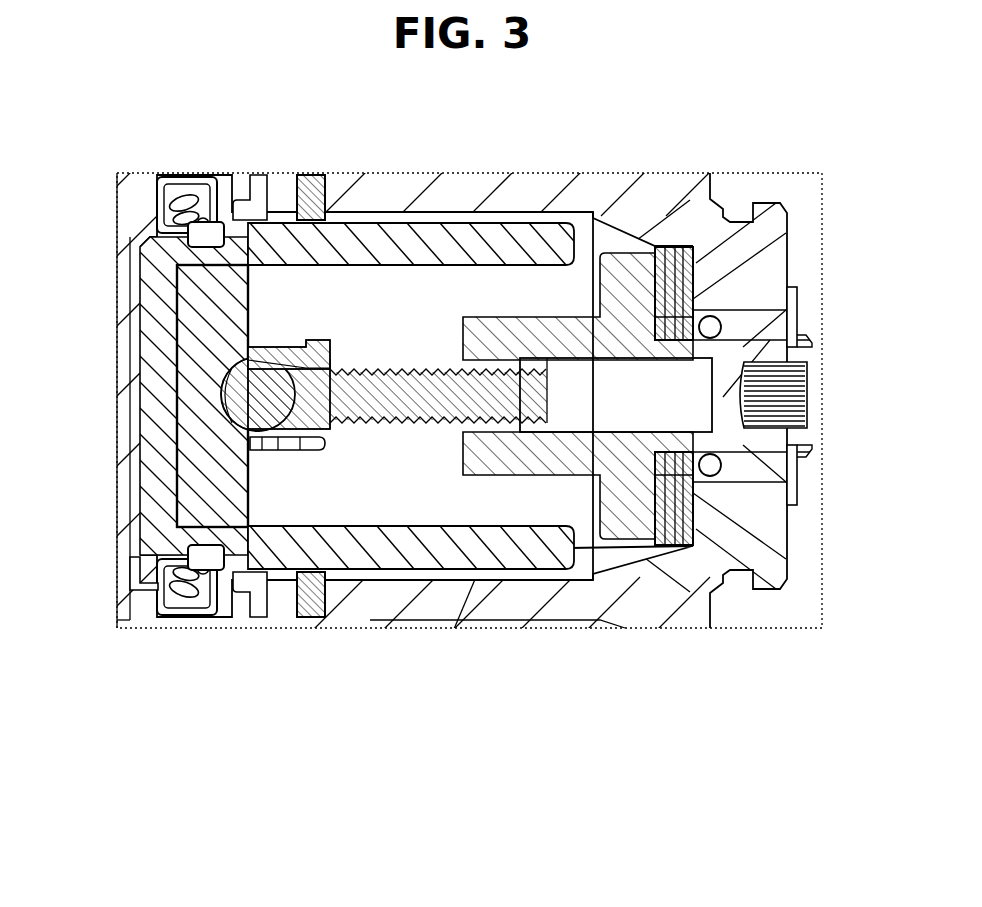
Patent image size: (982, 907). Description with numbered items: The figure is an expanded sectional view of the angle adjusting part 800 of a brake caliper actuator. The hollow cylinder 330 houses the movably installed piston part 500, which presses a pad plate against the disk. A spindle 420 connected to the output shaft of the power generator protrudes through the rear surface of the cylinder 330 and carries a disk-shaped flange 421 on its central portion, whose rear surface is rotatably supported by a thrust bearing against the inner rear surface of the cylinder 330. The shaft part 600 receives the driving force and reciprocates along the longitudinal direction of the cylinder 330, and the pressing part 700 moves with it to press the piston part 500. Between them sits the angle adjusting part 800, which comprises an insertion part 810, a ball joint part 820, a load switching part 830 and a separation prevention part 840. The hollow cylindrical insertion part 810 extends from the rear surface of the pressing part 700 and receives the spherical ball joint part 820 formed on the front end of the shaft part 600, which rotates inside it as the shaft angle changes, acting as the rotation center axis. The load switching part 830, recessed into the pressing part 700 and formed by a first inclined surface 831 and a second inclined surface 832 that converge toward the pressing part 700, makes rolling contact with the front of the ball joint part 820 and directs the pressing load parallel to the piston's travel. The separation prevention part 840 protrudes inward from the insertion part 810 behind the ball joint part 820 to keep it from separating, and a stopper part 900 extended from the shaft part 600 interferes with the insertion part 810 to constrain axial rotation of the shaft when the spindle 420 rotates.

The cylinder 330 is at (642, 213).
The piston part 500 is at (463, 250).
The pressing part 700 is at (213, 320).
The stopper part 900 is at (330, 340).
The shaft part 600 is at (410, 415).
The flange 421 is at (632, 522).
The spindle 420 is at (790, 316).
The angle adjusting part 800 is at (232, 487).
The insertion part 810 is at (310, 622).
The ball joint part 820 is at (262, 438).
The load switching part 830 is at (158, 463).
The first inclined surface 831 is at (134, 592).
The second inclined surface 832 is at (195, 600).
The separation prevention part 840 is at (318, 450).